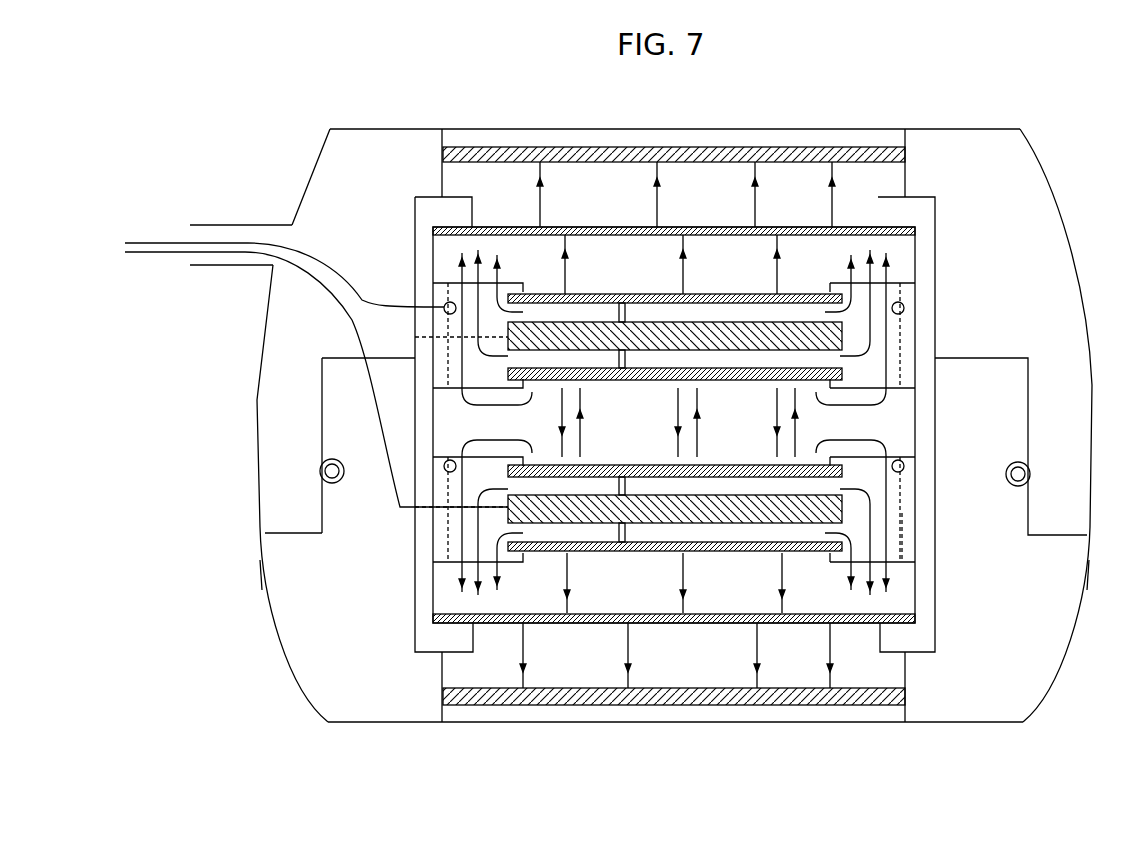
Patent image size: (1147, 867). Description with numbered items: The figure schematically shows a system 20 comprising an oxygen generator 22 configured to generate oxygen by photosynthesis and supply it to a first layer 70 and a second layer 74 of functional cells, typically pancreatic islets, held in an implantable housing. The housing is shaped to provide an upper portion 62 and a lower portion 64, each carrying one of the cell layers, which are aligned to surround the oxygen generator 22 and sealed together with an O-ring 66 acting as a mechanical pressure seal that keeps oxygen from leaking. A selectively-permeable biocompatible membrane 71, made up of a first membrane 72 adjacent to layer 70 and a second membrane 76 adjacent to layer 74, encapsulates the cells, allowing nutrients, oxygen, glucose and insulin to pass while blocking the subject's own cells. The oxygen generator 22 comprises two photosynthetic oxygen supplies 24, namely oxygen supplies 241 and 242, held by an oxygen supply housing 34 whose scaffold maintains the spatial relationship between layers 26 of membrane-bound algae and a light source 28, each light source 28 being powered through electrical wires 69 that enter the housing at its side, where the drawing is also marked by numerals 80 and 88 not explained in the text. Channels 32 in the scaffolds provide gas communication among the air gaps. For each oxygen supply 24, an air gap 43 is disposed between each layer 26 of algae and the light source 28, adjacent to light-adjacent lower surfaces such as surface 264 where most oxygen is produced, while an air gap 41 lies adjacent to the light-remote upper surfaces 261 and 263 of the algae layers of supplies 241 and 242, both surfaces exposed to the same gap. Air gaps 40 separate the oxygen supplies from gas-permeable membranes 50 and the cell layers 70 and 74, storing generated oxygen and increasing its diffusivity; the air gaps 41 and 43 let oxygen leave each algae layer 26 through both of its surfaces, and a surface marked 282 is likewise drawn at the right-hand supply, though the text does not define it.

The system 20 is at (452, 100).
The oxygen generator 22 is at (400, 572).
The photosynthetic oxygen supply 24 is at (437, 297).
The layer of algae 26 is at (660, 467).
The light source 28 is at (608, 296).
The channel 32 is at (444, 307).
The oxygen supply housing 34 is at (423, 545).
The air gap 40 is at (739, 195).
The air gap 41 is at (743, 432).
The air gap 43 is at (643, 422).
The gas-permeable membrane 50 is at (597, 226).
The upper portion 62 is at (282, 328).
The lower portion 64 is at (278, 557).
The O-ring 66 is at (320, 470).
The electrical wire 69 is at (150, 247).
The first layer of functional cells 70 is at (545, 146).
The selectively-permeable biocompatible membrane 71 is at (796, 112).
The first membrane 72 is at (630, 129).
The second layer of functional cells 74 is at (532, 706).
The second membrane 76 is at (625, 723).
The housing 80 is at (311, 168).
The wire slot 88 is at (205, 222).
The oxygen supply 241 is at (944, 333).
The oxygen supply 242 is at (930, 528).
The upper surface of algae layer 261 is at (583, 381).
The upper surface of algae layer 263 is at (545, 395).
The lower surface of algae layer 264 is at (830, 457).
The upper right flow path 282 is at (850, 393).